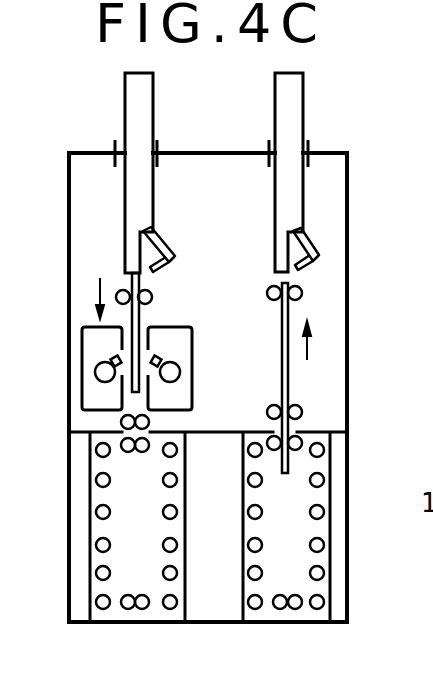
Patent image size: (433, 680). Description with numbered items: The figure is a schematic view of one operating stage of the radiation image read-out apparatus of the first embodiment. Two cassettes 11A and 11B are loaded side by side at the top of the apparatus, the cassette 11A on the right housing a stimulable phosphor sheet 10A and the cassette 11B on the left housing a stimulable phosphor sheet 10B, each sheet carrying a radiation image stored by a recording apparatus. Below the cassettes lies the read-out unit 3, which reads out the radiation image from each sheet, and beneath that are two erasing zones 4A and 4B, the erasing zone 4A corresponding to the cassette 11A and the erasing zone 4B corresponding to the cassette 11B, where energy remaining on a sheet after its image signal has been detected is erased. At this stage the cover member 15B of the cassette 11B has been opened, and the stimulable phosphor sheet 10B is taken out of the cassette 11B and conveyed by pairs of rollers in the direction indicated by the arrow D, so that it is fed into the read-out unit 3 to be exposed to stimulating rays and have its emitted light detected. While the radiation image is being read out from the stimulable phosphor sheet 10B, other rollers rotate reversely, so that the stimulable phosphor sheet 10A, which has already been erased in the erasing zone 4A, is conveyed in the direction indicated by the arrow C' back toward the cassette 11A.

The cassette 11B is at (153, 74).
The cassette 11A is at (305, 73).
The cover member 15B is at (165, 258).
The stimulable phosphor sheet 10B is at (142, 310).
The stimulable phosphor sheet 10A is at (288, 383).
The read-out unit 3 is at (82, 368).
The erasing zone 4B is at (113, 595).
The erasing zone 4A is at (302, 582).
The arrow D is at (100, 291).
The arrow C' is at (350, 327).